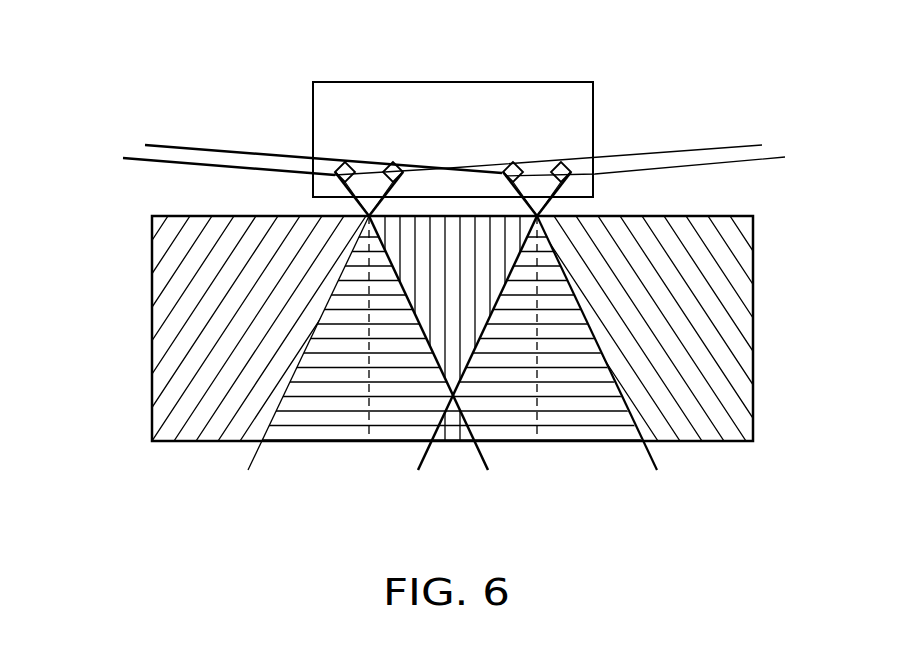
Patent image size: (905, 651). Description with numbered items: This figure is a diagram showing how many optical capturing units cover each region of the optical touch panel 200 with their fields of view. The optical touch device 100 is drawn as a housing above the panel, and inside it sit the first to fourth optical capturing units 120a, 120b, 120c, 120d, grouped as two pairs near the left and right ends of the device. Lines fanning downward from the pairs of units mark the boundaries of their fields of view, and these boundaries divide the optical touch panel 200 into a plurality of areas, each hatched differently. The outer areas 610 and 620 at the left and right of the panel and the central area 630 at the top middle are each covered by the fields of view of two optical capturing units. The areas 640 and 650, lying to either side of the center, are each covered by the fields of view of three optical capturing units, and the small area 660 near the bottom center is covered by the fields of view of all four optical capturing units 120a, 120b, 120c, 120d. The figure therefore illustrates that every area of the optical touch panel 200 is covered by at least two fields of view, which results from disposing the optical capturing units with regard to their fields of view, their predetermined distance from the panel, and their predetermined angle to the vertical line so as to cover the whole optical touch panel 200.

The optical touch device 100 is at (567, 81).
The first optical capturing unit 120a is at (343, 162).
The second optical capturing unit 120b is at (391, 162).
The third optical capturing unit 120c is at (514, 162).
The fourth optical capturing unit 120d is at (562, 162).
The optical touch panel 200 is at (692, 214).
The area 610 is at (180, 430).
The area 620 is at (713, 430).
The area 630 is at (440, 313).
The area 640 is at (303, 430).
The area 650 is at (580, 430).
The area 660 is at (452, 430).